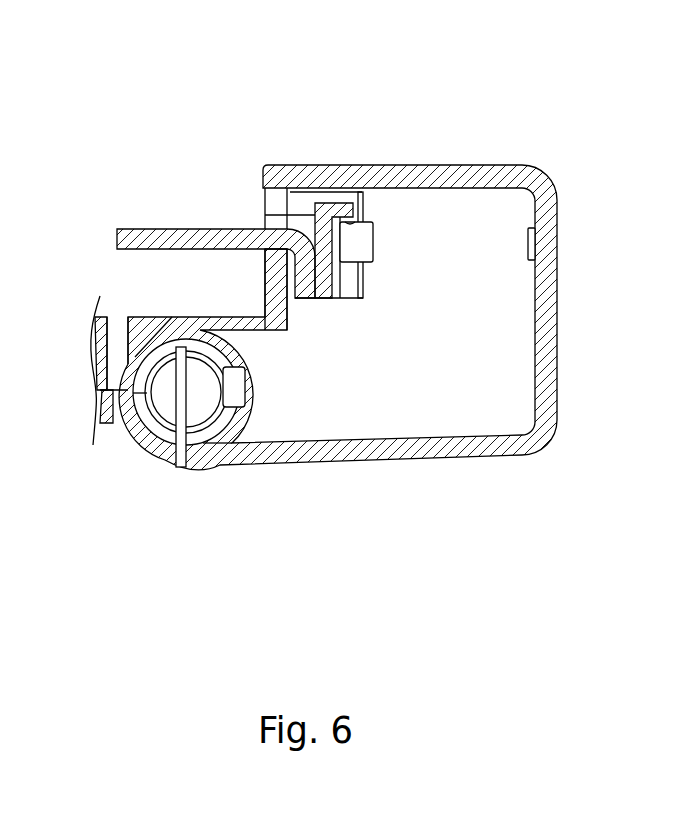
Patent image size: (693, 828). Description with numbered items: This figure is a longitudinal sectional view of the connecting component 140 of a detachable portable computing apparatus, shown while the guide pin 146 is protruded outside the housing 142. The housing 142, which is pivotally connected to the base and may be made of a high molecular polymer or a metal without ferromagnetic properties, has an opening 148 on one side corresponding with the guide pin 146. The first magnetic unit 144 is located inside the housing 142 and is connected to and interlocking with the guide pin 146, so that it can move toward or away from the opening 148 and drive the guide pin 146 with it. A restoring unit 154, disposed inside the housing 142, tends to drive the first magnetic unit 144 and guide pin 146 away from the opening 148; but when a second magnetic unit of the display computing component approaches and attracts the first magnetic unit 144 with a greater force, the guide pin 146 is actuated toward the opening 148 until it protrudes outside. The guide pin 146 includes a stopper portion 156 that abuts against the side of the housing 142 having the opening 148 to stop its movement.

The connecting component 140 is at (663, 48).
The housing 142 is at (557, 313).
The first magnetic unit 144 is at (295, 203).
The guide pin 146 is at (152, 229).
The opening 148 is at (258, 217).
The restoring unit 154 is at (557, 235).
The stopper portion 156 is at (265, 250).